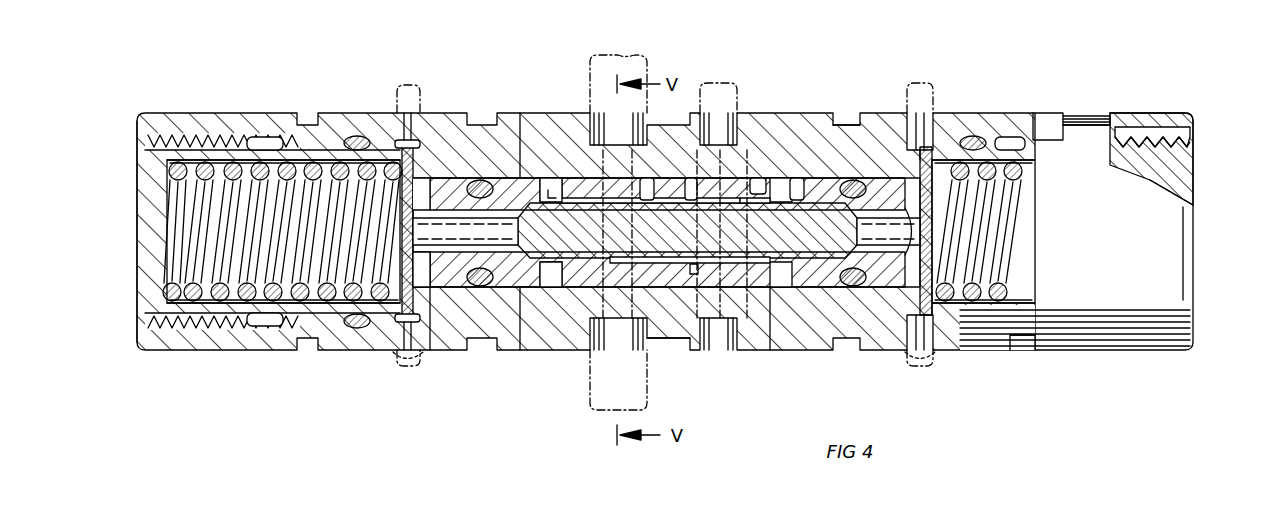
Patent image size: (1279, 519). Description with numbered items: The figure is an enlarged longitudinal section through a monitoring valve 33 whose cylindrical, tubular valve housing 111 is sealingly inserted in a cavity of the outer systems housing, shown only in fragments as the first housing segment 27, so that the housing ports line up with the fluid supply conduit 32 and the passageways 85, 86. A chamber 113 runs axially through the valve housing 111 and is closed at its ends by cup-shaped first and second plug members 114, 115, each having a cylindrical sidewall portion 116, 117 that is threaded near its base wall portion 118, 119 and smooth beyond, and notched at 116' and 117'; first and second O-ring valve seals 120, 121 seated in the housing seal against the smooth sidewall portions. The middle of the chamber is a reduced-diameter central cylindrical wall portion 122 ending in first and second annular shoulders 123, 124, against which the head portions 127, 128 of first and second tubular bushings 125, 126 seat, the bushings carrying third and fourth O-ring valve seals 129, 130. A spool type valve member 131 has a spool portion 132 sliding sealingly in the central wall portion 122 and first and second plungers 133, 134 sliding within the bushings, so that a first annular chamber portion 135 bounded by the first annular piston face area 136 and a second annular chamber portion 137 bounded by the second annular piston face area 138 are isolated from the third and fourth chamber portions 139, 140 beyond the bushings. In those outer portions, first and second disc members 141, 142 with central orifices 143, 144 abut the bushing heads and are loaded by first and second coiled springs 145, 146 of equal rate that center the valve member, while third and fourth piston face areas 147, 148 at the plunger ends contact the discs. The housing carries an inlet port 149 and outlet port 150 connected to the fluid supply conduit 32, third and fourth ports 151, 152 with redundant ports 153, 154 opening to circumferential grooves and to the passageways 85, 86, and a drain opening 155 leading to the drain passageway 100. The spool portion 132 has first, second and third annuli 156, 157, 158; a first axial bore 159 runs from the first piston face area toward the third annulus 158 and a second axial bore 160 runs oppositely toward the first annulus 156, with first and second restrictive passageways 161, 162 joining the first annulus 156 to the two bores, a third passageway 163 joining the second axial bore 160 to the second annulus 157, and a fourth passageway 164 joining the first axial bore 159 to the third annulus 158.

The first housing segment 27 is at (393, 360).
The fluid supply conduit 32 is at (630, 58).
The monitoring valve 33 is at (1013, 401).
The passageway 85 is at (420, 98).
The passageway 86 is at (936, 86).
The drain passageway 100 is at (735, 85).
The valve housing 111 is at (560, 353).
The chamber 113 is at (787, 283).
The first plug member 114 is at (135, 180).
The second plug member 115 is at (1195, 154).
The sidewall portion 116 is at (265, 113).
The notch 116' is at (368, 204).
The sidewall portion 117 is at (1015, 117).
The notch 117' is at (965, 115).
The base wall portion 118 is at (137, 248).
The base wall portion 119 is at (1195, 183).
The first O-ring valve seal 120 is at (355, 134).
The second O-ring valve seal 121 is at (998, 130).
The central cylindrical wall portion 122 is at (513, 294).
The first annular shoulder 123 is at (432, 126).
The second annular shoulder 124 is at (916, 300).
The first tubular bushing 125 is at (490, 340).
The second tubular bushing 126 is at (843, 338).
The head portion 127 is at (432, 345).
The head portion 128 is at (910, 352).
The third O-ring valve seal 129 is at (481, 170).
The fourth O-ring valve seal 130 is at (848, 130).
The spool type valve member 131 is at (755, 172).
The spool portion 132 is at (678, 345).
The first plunger 133 is at (524, 127).
The second plunger 134 is at (862, 128).
The first annular chamber portion 135 is at (551, 176).
The first annular piston face area 136 is at (544, 287).
The second annular chamber portion 137 is at (796, 198).
The second annular piston face area 138 is at (780, 340).
The third chamber portion 139 is at (300, 163).
The fourth chamber portion 140 is at (1084, 126).
The first disc member 141 is at (370, 325).
The second disc member 142 is at (960, 338).
The central orifice 143 is at (465, 196).
The central orifice 144 is at (962, 228).
The first coiled spring 145 is at (267, 330).
The second coiled spring 146 is at (1020, 208).
The third piston face area 147 is at (442, 281).
The fourth piston face area 148 is at (950, 250).
The inlet port 149 is at (618, 364).
The outlet port 150 is at (618, 129).
The third port 151 is at (406, 108).
The fourth port 152 is at (918, 108).
The redundant port 153 is at (413, 356).
The redundant port 154 is at (926, 358).
The drain opening 155 is at (716, 110).
The first annulus 156 is at (647, 180).
The second annulus 157 is at (690, 176).
The third annulus 158 is at (752, 127).
The first axial bore 159 is at (642, 212).
The second axial bore 160 is at (733, 286).
The first restrictive passageway 161 is at (600, 183).
The second restrictive passageway 162 is at (612, 280).
The third passageway 163 is at (718, 345).
The fourth passageway 164 is at (748, 205).